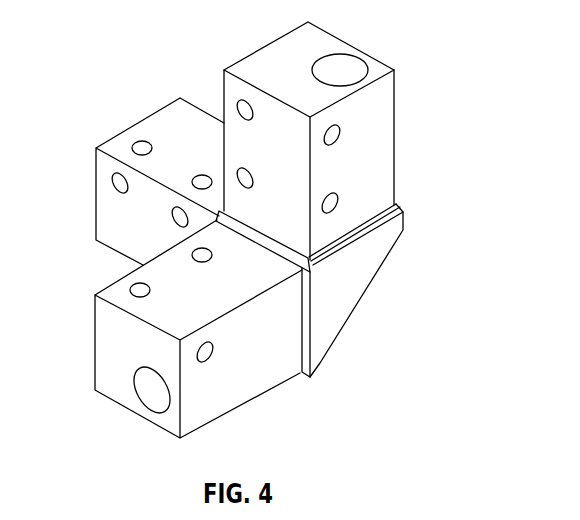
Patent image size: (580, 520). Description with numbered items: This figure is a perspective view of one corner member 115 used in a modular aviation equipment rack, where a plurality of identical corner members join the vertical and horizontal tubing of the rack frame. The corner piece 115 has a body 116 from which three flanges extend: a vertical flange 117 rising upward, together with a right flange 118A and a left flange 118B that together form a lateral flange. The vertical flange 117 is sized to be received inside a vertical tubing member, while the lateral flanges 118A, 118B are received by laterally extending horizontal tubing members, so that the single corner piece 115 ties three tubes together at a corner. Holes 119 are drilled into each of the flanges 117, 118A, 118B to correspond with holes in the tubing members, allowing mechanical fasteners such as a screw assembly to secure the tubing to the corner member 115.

The corner member 115 is at (409, 170).
The body 116 is at (352, 281).
The vertical flange 117 is at (380, 93).
The right flange 118A is at (175, 113).
The left flange 118B is at (192, 329).
The holes 119 is at (140, 290).